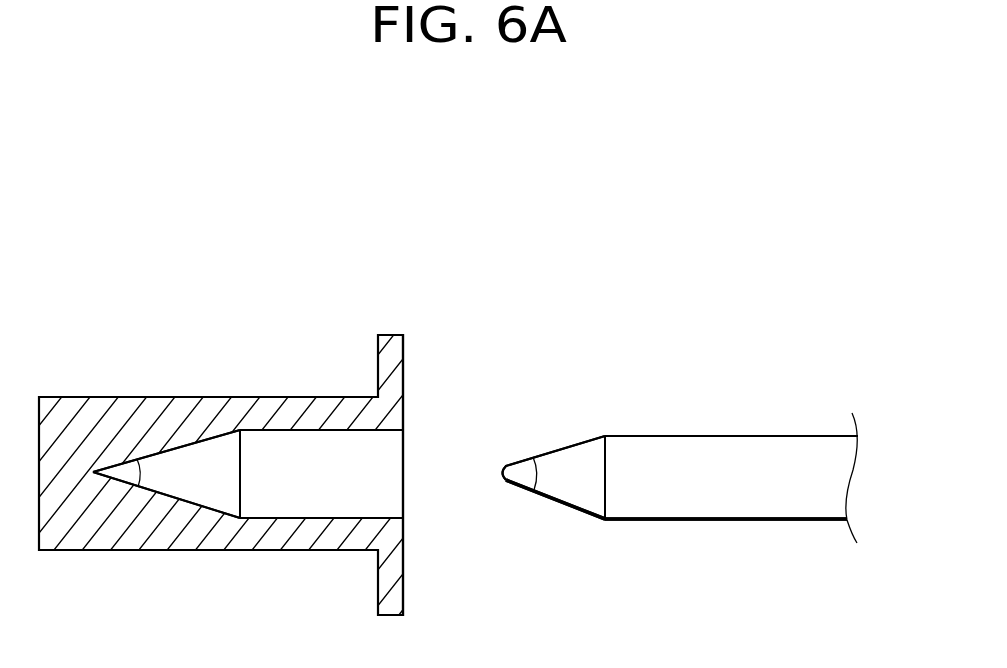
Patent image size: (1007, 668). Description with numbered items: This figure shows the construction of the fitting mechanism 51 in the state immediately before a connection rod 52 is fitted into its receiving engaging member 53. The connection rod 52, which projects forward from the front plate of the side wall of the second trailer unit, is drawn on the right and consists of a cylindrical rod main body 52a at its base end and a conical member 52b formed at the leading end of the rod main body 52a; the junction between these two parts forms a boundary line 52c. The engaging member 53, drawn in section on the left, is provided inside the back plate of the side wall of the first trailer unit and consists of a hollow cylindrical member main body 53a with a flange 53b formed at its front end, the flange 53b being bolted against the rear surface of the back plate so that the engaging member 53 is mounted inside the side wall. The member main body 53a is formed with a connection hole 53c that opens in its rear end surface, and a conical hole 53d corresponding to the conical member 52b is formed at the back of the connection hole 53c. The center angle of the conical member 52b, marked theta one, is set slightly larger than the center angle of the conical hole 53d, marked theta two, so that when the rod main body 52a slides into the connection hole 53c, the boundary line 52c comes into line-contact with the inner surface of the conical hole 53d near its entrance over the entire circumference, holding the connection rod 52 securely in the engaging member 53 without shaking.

The fitting mechanism 51 is at (670, 215).
The connection rod 52 is at (737, 275).
The rod main body 52a is at (722, 445).
The conical member 52b is at (588, 450).
The boundary line 52c is at (608, 477).
The engaging member 53 is at (403, 270).
The member main body 53a is at (240, 405).
The flange 53b is at (390, 370).
The connection hole 53c is at (308, 500).
The conical hole 53d is at (202, 495).